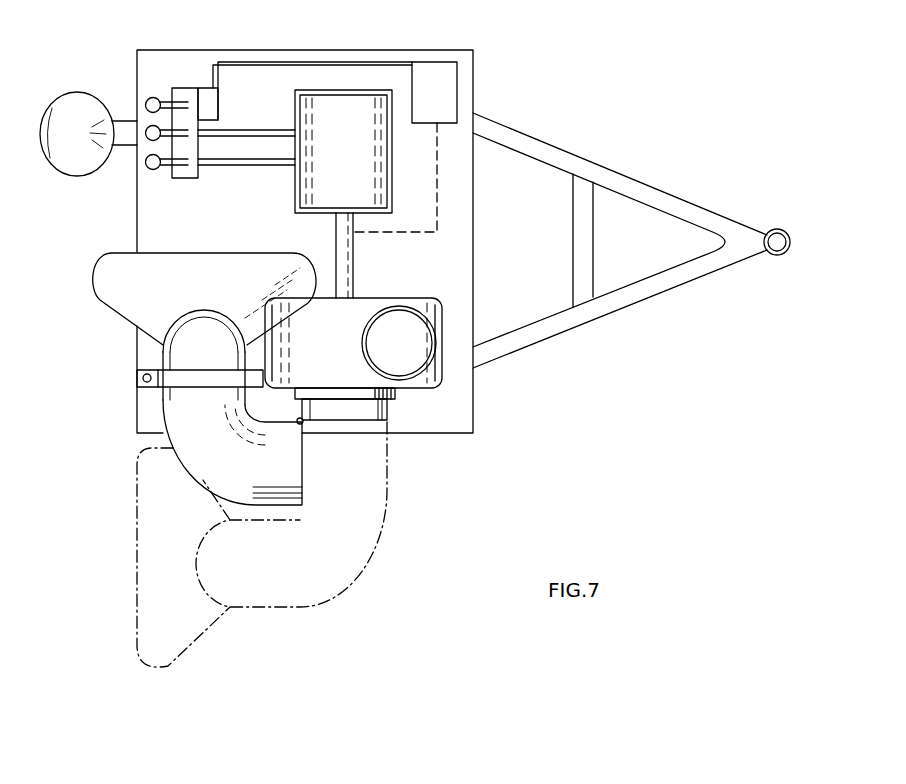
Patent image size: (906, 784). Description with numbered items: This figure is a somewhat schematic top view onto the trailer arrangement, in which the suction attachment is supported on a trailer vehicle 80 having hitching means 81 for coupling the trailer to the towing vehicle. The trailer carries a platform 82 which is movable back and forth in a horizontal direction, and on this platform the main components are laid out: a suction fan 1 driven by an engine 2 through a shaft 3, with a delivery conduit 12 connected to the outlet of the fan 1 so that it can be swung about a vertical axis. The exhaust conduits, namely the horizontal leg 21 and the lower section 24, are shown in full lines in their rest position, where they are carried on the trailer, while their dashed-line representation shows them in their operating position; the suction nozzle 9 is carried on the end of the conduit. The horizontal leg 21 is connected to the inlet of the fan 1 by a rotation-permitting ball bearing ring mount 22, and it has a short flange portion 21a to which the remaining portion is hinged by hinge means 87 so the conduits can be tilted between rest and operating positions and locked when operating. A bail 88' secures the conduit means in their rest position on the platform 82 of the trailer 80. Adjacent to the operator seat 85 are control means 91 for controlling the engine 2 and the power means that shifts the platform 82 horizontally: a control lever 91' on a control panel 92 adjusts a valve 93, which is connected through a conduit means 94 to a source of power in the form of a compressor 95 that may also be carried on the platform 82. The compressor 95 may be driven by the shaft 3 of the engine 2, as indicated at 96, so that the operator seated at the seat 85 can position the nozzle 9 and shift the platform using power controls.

The suction fan 1 is at (375, 307).
The engine 2 is at (348, 152).
The shaft 3 is at (350, 264).
The suction nozzle 9 is at (112, 262).
The delivery conduit 12 is at (422, 333).
The horizontal portion of the conduit 21 is at (220, 465).
The short flange portion 21a is at (387, 413).
The ball bearing ring mount 22 is at (393, 395).
The lower section of the conduit 24 is at (173, 397).
The trailer vehicle 80 is at (482, 40).
The hitching means 81 is at (630, 182).
The platform 82 is at (463, 82).
The operator seat 85 is at (64, 93).
The latch 87 is at (302, 423).
The bail 88' is at (164, 357).
The control means 91 is at (167, 182).
The control lever 91' is at (141, 100).
The control panel 92 is at (159, 100).
The valve 93 is at (213, 108).
The conduit means 94 is at (323, 62).
The compressor 95 is at (432, 67).
The drive indication 96 is at (440, 226).